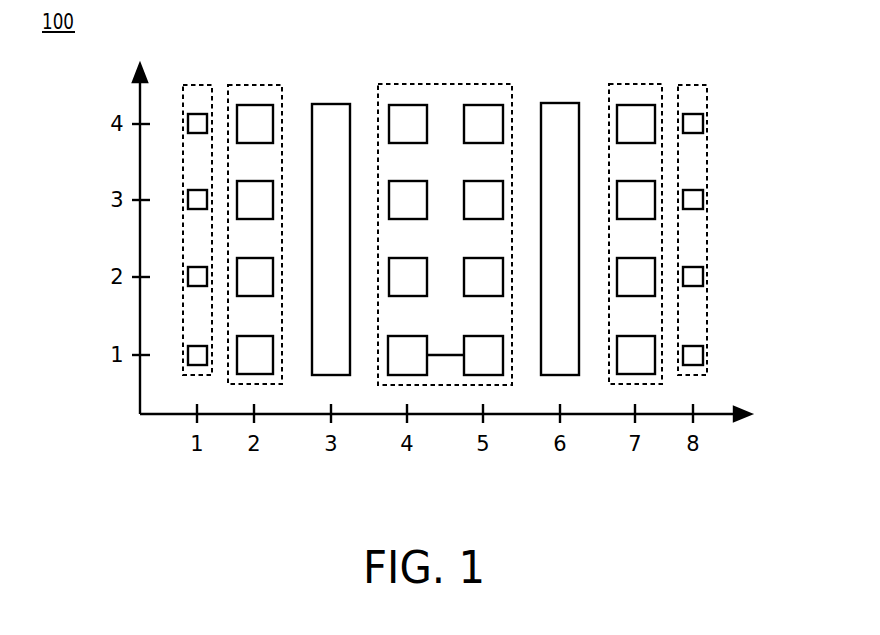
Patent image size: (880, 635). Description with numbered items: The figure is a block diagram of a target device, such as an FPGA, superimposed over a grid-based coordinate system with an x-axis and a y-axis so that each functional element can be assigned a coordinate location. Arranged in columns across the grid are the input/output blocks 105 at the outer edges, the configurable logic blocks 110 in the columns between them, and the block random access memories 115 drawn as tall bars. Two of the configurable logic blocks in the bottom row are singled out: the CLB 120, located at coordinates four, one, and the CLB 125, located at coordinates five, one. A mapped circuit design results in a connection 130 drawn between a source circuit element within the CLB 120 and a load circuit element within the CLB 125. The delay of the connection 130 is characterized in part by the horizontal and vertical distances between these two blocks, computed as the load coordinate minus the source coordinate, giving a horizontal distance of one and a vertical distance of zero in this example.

The input/output blocks (IOBs) 105 is at (198, 83).
The configurable logic blocks (CLBs) 110 is at (255, 83).
The block random access memories (BRAMs) 115 is at (332, 103).
The CLB 120 is at (407, 375).
The CLB 125 is at (483, 375).
The connection 130 is at (435, 356).